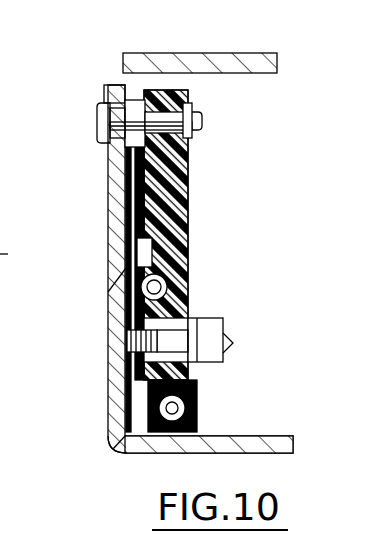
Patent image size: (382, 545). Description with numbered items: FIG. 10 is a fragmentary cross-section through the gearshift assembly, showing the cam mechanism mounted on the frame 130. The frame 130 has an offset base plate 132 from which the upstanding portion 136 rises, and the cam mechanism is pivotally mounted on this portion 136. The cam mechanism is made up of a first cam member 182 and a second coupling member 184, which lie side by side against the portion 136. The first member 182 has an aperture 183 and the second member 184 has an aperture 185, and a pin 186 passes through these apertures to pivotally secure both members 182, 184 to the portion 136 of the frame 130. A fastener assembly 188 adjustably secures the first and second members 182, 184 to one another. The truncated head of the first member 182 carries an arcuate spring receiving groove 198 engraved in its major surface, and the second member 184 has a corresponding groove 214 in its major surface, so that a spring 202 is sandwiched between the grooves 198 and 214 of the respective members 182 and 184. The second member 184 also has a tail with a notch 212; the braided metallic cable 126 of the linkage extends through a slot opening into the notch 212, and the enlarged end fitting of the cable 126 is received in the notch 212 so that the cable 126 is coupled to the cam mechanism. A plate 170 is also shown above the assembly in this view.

The top plate 170 is at (226, 53).
The aperture 183 is at (108, 105).
The pin 186 is at (100, 128).
The aperture 185 is at (203, 118).
The upstanding portion 136 is at (114, 157).
The second coupling member 184 is at (190, 176).
The first cam member 182 is at (126, 185).
The arcuate spring receiving groove 198 is at (140, 259).
The spring 202 is at (118, 283).
The groove 214 is at (170, 283).
The fastener assembly 188 is at (225, 328).
The cable 126 is at (190, 408).
The notch 212 is at (137, 432).
The frame 130 is at (122, 458).
The offset base plate 132 is at (273, 450).